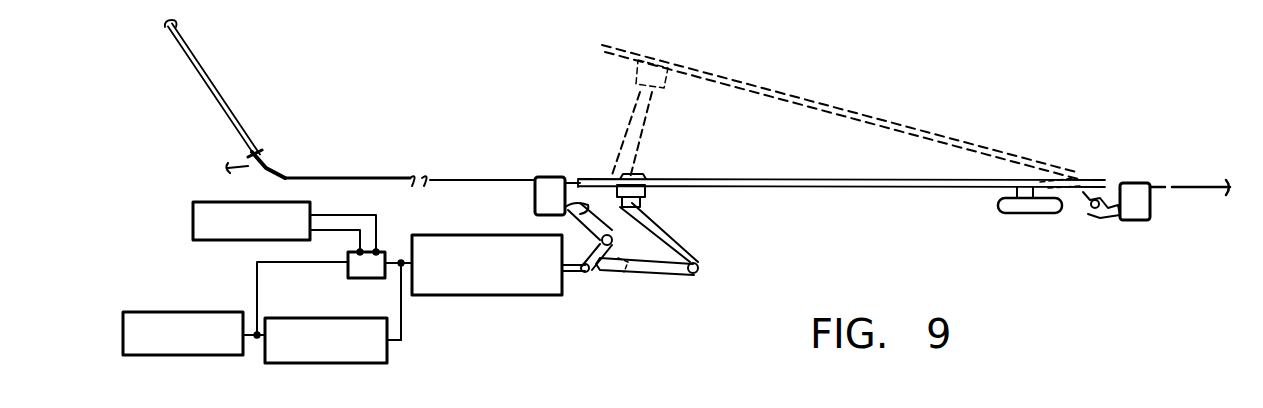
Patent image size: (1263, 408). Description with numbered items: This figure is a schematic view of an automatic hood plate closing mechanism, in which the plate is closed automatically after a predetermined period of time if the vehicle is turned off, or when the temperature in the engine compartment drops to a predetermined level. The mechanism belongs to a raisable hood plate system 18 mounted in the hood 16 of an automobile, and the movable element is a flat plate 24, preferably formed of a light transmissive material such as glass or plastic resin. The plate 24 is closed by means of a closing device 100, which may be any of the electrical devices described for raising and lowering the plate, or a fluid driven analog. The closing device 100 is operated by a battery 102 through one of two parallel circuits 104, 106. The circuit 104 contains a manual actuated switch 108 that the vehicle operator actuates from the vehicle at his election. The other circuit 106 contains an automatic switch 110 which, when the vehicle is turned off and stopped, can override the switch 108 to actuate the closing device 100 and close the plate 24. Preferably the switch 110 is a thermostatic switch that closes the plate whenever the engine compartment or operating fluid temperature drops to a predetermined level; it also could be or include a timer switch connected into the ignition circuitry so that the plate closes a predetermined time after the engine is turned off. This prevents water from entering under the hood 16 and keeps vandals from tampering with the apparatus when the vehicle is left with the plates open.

The hood 16 is at (1178, 183).
The raisable hood plate system 18 is at (213, 80).
The flat plate 24 is at (740, 178).
The closing device 100 is at (515, 298).
The battery 102 is at (165, 357).
The circuit 104 is at (257, 286).
The circuit 106 is at (401, 320).
The manual actuated switch 108 is at (228, 238).
The automatic switch 110 is at (290, 365).